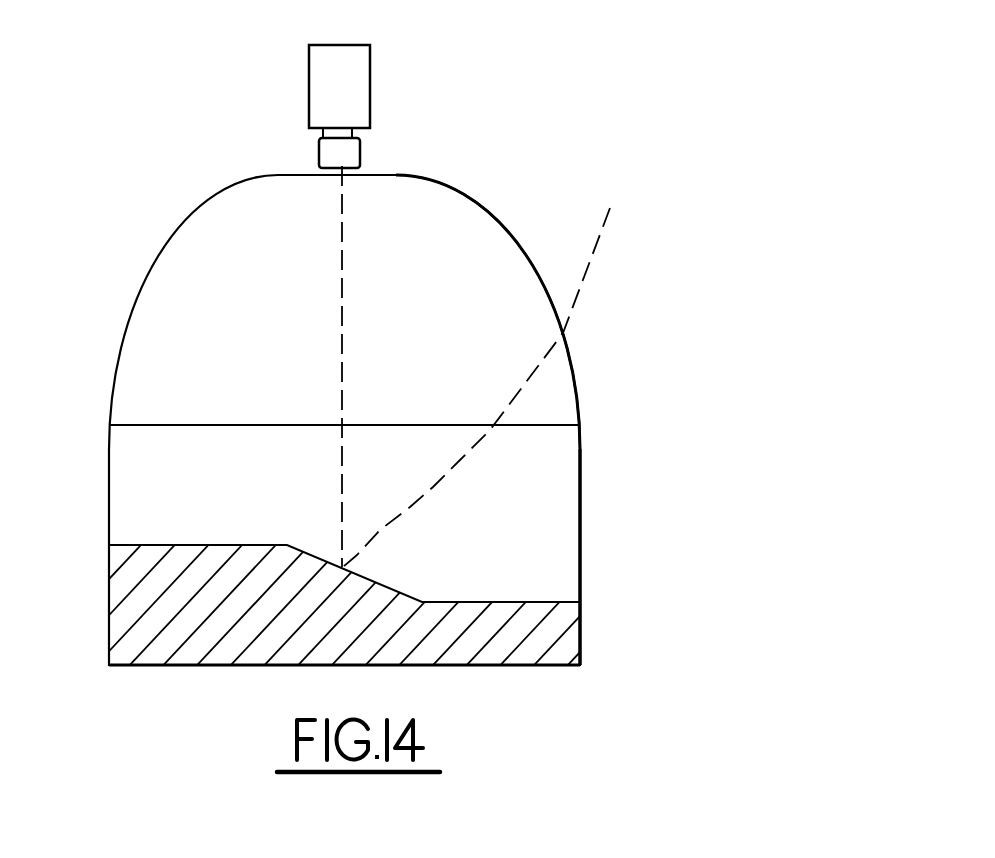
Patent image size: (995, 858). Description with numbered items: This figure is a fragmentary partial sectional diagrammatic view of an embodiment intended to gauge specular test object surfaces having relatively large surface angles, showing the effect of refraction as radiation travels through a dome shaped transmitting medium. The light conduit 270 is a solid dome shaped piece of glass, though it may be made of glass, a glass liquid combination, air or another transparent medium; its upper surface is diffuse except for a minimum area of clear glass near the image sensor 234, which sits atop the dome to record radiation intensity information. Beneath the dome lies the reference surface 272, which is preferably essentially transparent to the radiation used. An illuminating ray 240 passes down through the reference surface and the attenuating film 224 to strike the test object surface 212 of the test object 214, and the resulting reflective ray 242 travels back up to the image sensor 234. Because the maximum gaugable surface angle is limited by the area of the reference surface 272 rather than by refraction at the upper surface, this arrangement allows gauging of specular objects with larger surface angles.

The test object surface 212 is at (528, 600).
The test object 214 is at (572, 630).
The attenuating film 224 is at (580, 437).
The image sensor 234 is at (370, 92).
The illuminating ray 240 is at (597, 248).
The reflective ray 242 is at (343, 248).
The light conduit 270 is at (160, 258).
The reference surface 272 is at (135, 428).